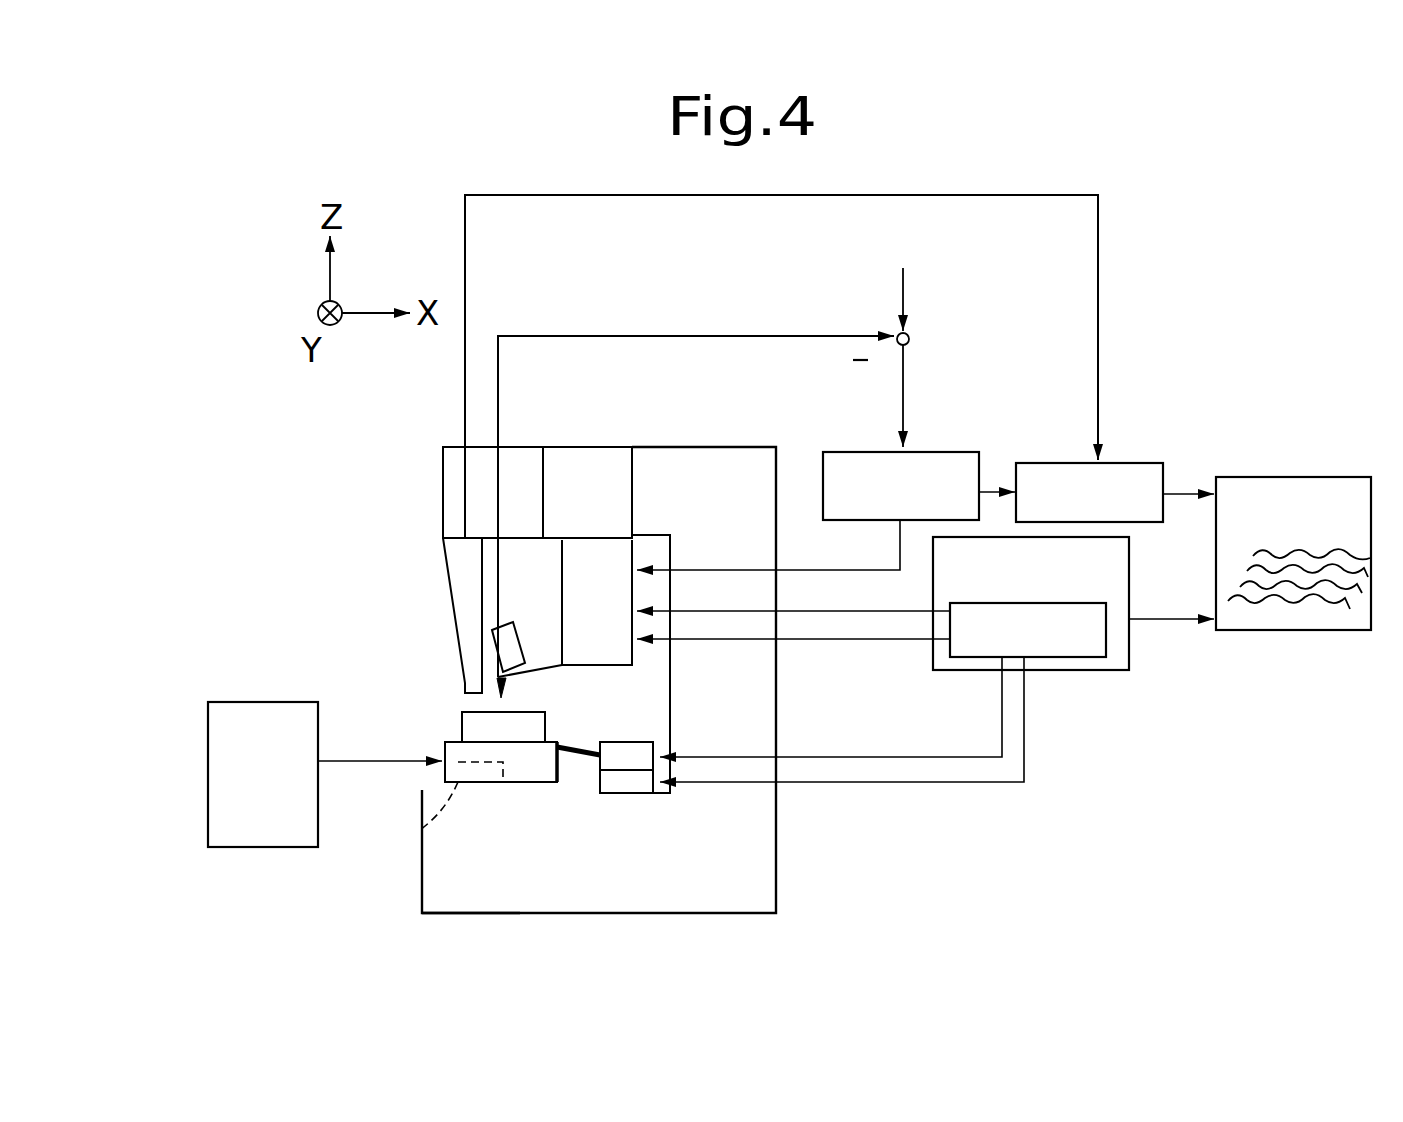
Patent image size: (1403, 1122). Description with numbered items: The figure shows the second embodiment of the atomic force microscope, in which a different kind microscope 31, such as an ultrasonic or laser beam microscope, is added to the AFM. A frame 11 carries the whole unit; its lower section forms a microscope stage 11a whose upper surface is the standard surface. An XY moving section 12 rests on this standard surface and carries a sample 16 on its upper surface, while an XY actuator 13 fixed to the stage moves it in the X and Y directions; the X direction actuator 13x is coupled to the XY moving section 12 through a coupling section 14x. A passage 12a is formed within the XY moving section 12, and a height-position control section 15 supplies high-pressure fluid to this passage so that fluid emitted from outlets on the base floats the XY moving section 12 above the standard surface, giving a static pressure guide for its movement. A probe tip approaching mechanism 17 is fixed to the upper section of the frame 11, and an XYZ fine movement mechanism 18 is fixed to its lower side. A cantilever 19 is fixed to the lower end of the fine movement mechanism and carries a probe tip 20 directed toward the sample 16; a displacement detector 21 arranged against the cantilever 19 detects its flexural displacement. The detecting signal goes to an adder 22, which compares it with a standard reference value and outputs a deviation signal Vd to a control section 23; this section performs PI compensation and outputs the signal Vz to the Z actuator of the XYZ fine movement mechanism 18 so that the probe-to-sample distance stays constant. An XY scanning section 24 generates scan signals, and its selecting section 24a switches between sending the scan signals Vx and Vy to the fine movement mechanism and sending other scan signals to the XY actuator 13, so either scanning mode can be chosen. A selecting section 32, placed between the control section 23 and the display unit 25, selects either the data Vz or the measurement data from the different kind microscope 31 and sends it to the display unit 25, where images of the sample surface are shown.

The frame 11 is at (779, 861).
The microscope stage 11a is at (453, 893).
The XY moving section 12 is at (537, 770).
The passage 12a is at (420, 830).
The XY actuator 13 is at (633, 790).
The X direction actuator 13x is at (640, 740).
The coupling section 14x is at (583, 768).
The height-position control section 15 is at (270, 705).
The sample 16 is at (462, 728).
The probe tip approaching mechanism 17 is at (604, 447).
The XYZ fine movement mechanism 18 is at (622, 652).
The cantilever 19 is at (530, 675).
The probe tip 20 is at (480, 678).
The displacement detector 21 is at (500, 645).
The adder 22 is at (910, 338).
The control section 23 is at (965, 450).
The XY scanning section 24 is at (1129, 567).
The selecting section 24a is at (1092, 657).
The display unit 25 is at (1275, 478).
The different kind microscope 31 is at (453, 558).
The selecting section 32 is at (1140, 463).